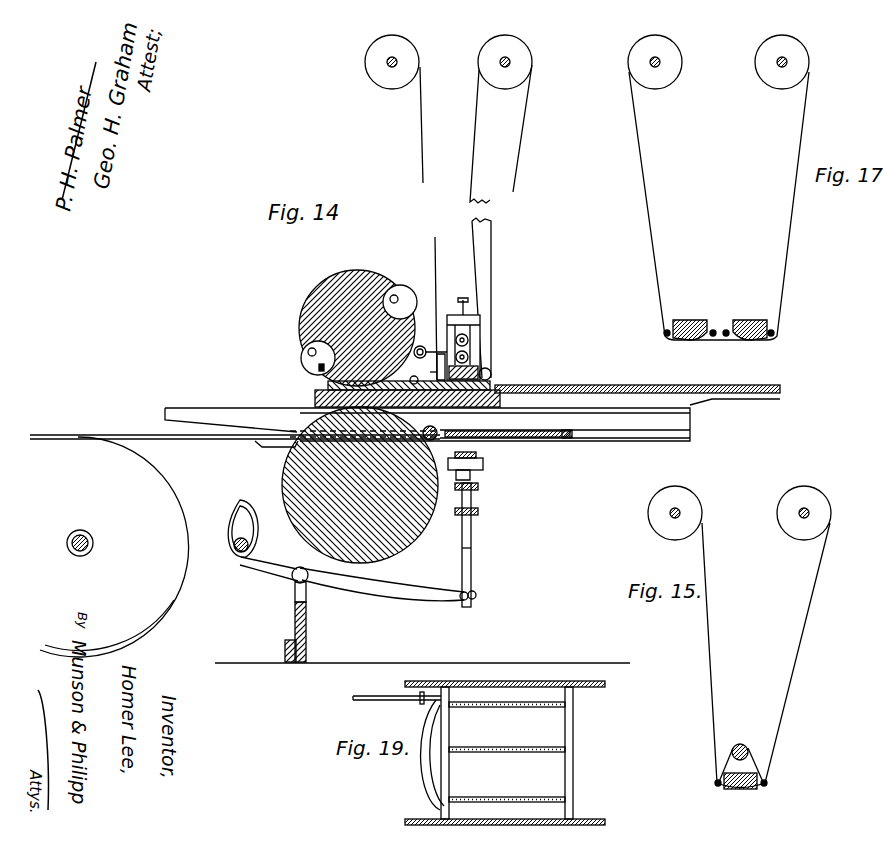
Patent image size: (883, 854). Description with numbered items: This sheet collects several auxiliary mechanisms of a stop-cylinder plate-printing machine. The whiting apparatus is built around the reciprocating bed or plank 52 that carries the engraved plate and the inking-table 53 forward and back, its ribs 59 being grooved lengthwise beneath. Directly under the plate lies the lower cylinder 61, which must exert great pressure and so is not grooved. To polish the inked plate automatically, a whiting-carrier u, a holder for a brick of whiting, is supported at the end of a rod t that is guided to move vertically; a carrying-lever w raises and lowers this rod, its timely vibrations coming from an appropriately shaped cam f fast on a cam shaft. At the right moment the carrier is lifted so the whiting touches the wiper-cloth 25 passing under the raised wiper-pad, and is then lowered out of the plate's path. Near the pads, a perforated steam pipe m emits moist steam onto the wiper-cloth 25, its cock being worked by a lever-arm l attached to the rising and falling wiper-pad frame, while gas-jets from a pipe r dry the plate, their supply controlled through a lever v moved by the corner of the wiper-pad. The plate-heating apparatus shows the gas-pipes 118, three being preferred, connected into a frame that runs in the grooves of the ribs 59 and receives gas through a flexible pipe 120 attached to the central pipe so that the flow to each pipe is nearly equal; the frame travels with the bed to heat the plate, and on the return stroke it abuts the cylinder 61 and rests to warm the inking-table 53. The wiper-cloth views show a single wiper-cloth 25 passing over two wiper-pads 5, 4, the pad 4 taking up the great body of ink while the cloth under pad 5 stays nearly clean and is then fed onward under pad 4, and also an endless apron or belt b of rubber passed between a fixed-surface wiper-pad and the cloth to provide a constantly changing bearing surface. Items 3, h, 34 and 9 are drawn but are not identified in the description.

In FIG. 14, the wiper-cloth 25 is at (421, 155).
In FIG. 17, the wiper-cloth 25 is at (651, 228).
In FIG. 15, the wiper-cloth 25 is at (710, 666).
In FIG. 14, the cam disc 3 is at (358, 328).
In FIG. 14, the lever-arm l is at (436, 354).
In FIG. 14, the pipe m is at (418, 356).
In FIG. 14, the lever v is at (430, 371).
In FIG. 14, the pipe r is at (410, 380).
In FIG. 14, the bed or plank 52 is at (416, 394).
In FIG. 14, the inking-table 53 is at (614, 388).
In FIG. 14, the ribs 59 is at (427, 424).
In FIG. 19, the ribs 59 is at (400, 826).
In FIG. 14, the gas-pipes 118 is at (542, 441).
In FIG. 19, the gas-pipes 118 is at (507, 752).
In FIG. 14, the flexible pipe 120 is at (183, 437).
In FIG. 19, the flexible pipe 120 is at (398, 751).
In FIG. 14, the guide h is at (295, 430).
In FIG. 14, the cylinder 61 is at (360, 485).
In FIG. 14, the reel 34 is at (114, 547).
In FIG. 14, the whiting-carrier u is at (484, 464).
In FIG. 14, the rod t is at (472, 531).
In FIG. 14, the carrying-lever w is at (384, 603).
In FIG. 14, the cam f is at (262, 525).
In FIG. 19, the post 9 is at (452, 702).
In FIG. 17, the wiper-pad 5 is at (683, 340).
In FIG. 17, the wiper-pad 4 is at (755, 340).
In FIG. 15, the apron or belt b is at (752, 760).